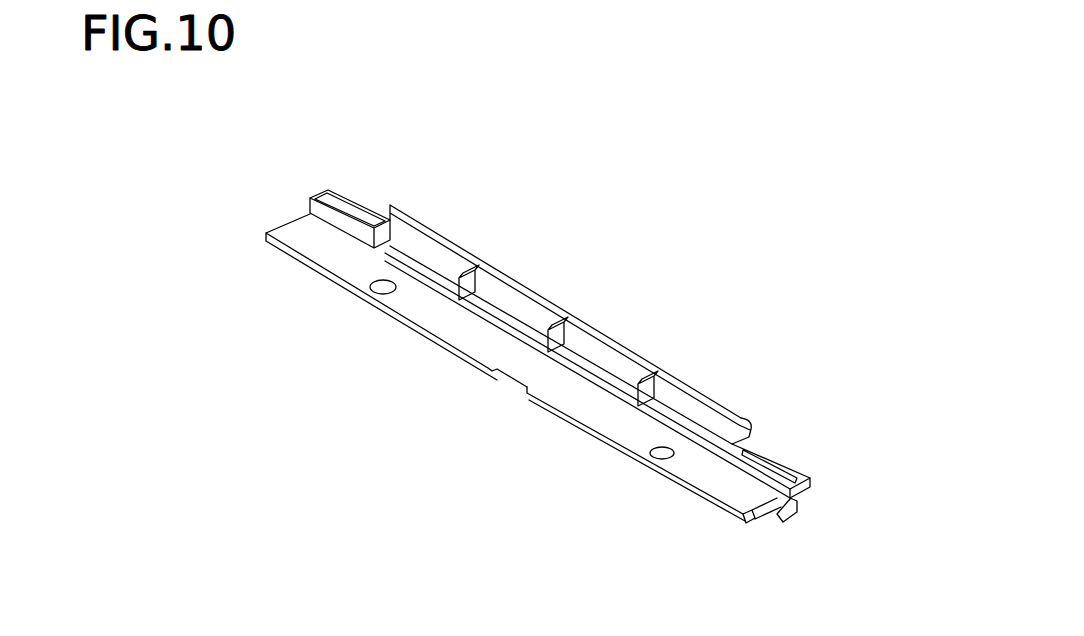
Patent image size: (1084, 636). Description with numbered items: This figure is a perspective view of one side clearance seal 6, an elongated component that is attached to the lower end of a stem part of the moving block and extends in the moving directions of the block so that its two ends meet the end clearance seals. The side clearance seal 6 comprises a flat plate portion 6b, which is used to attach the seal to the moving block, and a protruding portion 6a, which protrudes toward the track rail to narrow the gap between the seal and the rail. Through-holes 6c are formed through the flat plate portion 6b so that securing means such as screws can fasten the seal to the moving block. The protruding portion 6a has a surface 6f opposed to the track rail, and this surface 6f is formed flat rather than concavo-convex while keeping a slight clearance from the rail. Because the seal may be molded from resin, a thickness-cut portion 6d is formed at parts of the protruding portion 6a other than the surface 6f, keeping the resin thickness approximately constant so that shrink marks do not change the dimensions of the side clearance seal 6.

The side clearance seal 6 is at (581, 367).
The protruding portion 6a is at (600, 355).
The flat plate portion 6b is at (556, 396).
The through-holes 6c is at (380, 297).
The thickness-cut portion 6d is at (700, 410).
The surface 6f is at (805, 500).